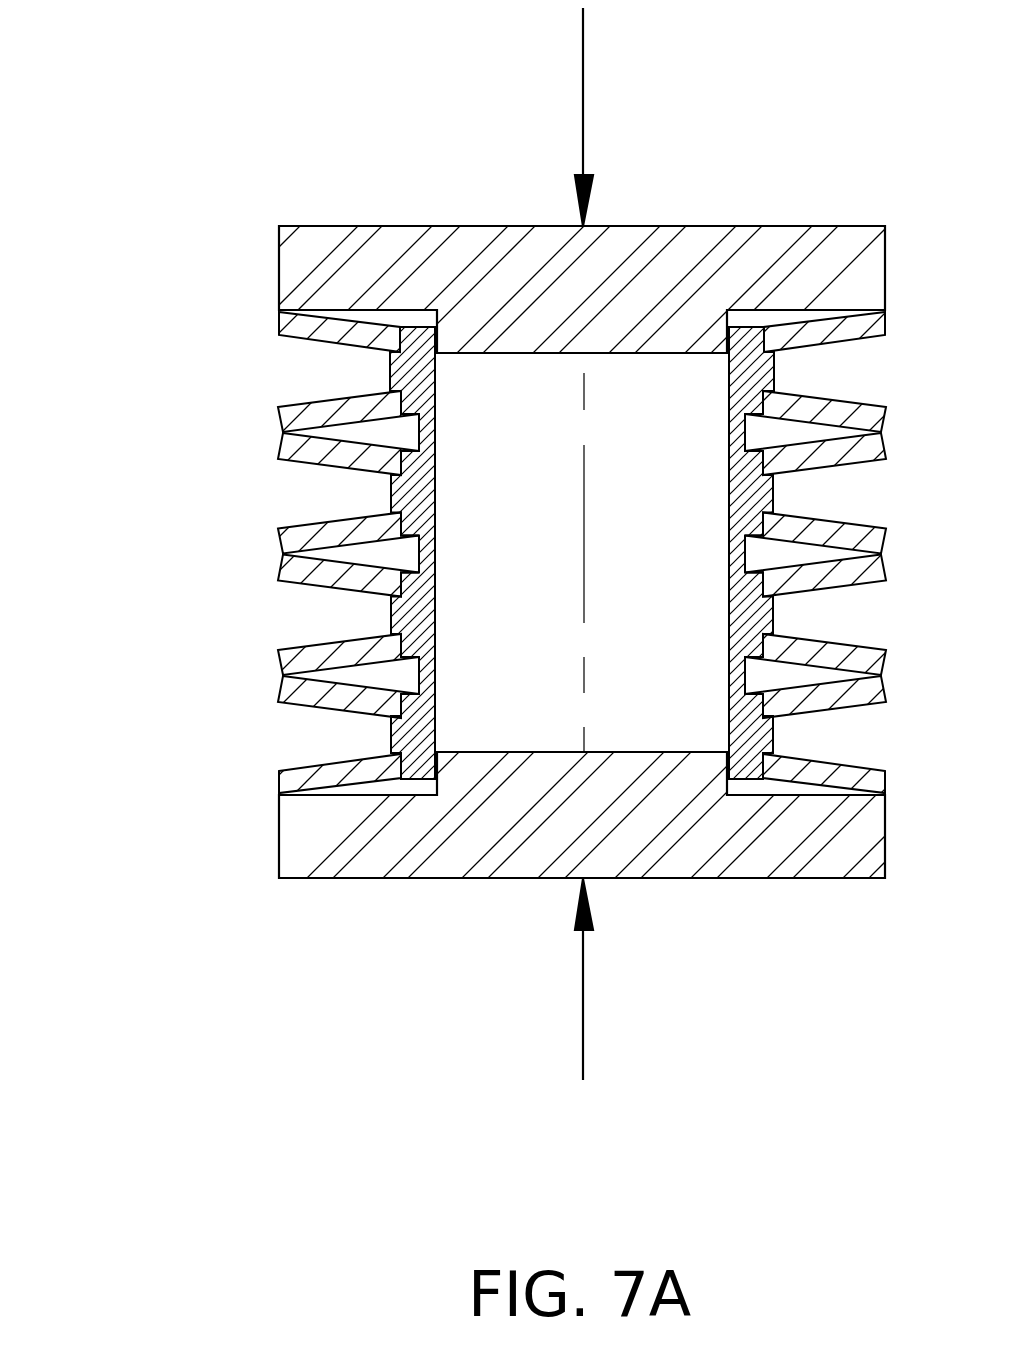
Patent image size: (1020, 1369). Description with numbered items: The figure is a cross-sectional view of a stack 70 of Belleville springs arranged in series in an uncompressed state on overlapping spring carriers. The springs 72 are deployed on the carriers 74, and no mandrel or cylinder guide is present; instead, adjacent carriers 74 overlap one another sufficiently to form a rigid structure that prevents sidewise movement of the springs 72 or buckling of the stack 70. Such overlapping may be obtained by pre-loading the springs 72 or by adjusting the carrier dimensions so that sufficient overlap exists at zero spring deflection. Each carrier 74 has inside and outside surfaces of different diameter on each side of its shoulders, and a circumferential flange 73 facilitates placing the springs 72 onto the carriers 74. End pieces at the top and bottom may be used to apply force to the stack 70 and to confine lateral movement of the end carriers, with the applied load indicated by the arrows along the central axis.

The stack 70 is at (529, 544).
The springs 72 is at (295, 528).
The circumferential flange 73 is at (390, 371).
The spring carriers 74 is at (435, 527).